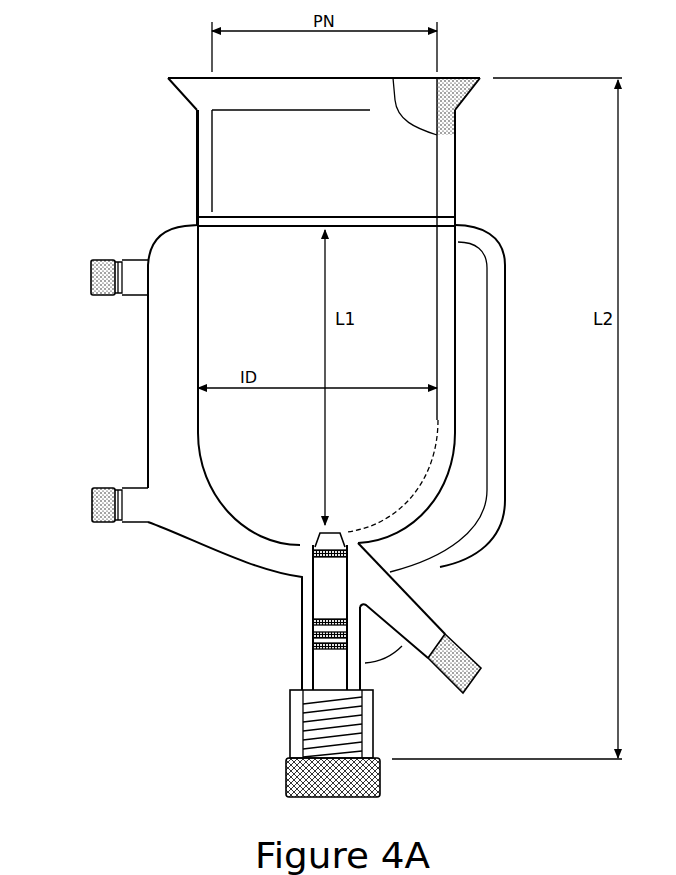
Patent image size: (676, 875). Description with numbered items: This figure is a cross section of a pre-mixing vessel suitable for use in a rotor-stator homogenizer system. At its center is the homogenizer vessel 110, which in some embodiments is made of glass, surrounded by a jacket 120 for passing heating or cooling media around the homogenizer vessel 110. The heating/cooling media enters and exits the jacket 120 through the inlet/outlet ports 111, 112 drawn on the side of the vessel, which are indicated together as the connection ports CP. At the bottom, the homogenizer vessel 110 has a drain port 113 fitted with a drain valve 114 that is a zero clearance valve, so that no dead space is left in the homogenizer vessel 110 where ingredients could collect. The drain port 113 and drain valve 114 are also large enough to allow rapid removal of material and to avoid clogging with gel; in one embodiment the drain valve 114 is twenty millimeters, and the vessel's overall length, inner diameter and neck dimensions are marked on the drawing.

The homogenizer vessel 110 is at (457, 178).
The inlet/outlet port 111 is at (128, 260).
The inlet/outlet port 112 is at (148, 500).
The drain port 113 is at (443, 630).
The drain valve 114 is at (315, 632).
The jacket 120 is at (505, 440).
The connection ports CP is at (86, 298).